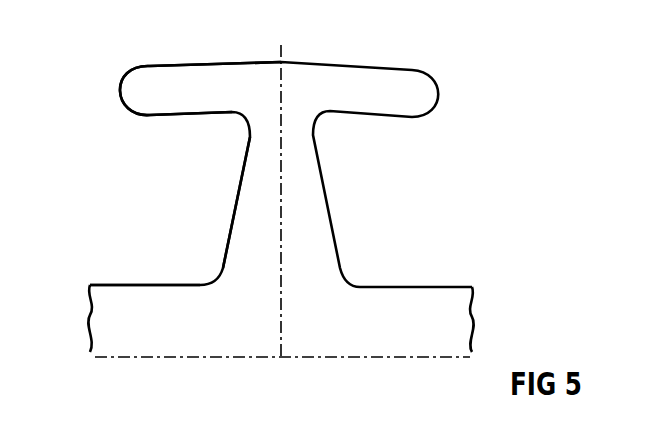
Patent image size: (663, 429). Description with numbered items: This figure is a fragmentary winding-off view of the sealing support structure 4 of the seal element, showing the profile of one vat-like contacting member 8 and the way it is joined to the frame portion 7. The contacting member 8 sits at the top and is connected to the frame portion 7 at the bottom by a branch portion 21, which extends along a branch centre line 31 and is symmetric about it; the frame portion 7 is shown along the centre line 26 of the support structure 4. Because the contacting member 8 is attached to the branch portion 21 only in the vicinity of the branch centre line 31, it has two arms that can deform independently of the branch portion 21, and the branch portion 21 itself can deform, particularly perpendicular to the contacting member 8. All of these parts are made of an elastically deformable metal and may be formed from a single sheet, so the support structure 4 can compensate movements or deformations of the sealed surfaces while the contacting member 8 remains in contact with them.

The support structure 4 is at (310, 197).
The branch portion 21 is at (252, 200).
The contacting member 8 is at (135, 93).
The branch centre line 31 is at (284, 68).
The frame portion 7 is at (125, 325).
The centre line 26 is at (402, 358).